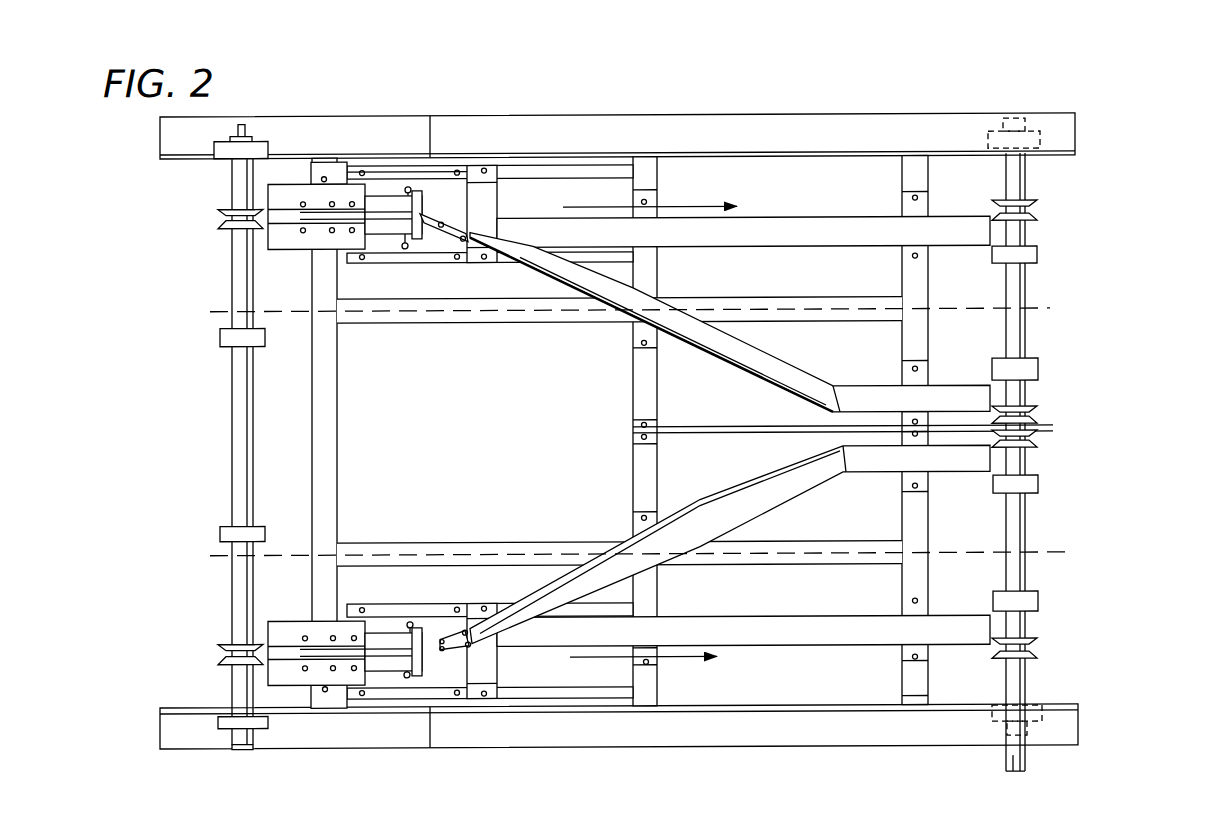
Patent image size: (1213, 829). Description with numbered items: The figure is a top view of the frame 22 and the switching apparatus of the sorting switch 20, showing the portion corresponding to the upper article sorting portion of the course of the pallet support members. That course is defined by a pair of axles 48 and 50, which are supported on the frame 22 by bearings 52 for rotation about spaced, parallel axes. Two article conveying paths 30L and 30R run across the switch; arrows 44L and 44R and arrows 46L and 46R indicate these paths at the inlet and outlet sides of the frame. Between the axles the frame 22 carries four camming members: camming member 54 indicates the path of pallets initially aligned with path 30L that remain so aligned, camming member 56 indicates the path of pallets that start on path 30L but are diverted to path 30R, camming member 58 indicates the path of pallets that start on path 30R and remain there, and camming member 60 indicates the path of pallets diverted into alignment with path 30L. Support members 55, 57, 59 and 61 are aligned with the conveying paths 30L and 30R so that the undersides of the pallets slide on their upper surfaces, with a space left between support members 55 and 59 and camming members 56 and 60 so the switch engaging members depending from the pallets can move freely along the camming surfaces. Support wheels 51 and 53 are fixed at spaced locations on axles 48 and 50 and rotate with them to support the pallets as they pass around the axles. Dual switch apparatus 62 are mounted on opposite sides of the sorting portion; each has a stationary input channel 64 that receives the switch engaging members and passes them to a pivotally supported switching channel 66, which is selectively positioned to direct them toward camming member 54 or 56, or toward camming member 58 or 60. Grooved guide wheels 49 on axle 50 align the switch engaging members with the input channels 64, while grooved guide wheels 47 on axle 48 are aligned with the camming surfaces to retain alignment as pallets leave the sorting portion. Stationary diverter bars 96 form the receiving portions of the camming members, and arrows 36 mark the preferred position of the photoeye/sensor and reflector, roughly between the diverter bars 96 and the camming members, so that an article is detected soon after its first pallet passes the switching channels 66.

The sorting switch 20 is at (1101, 194).
The frame 22 is at (615, 110).
The article conveying path 30L is at (472, 322).
The article conveying path 30R is at (471, 542).
The arrows 36 is at (470, 108).
The left strand inlet path 44L is at (210, 311).
The right strand inlet path 44R is at (210, 555).
The left strand outlet path 46L is at (1180, 309).
The right strand outlet path 46R is at (1173, 552).
The guide wheels 47 is at (1038, 224).
The axle 48 is at (1026, 189).
The guide wheels 49 is at (228, 228).
The axle 50 is at (232, 432).
The support wheels 51 is at (1037, 265).
The bearings 52 is at (213, 146).
The support wheels 53 is at (220, 338).
The camming member 54 is at (877, 213).
The support member 55 is at (583, 330).
The camming member 56 is at (731, 375).
The support member 57 is at (842, 297).
The camming member 58 is at (737, 617).
The support member 59 is at (576, 542).
The camming member 60 is at (757, 485).
The support member 61 is at (862, 542).
The switch apparatus 62 is at (350, 270).
The input channel 64 is at (290, 181).
The switching channel 66 is at (388, 190).
The diverter bars 96 is at (452, 242).